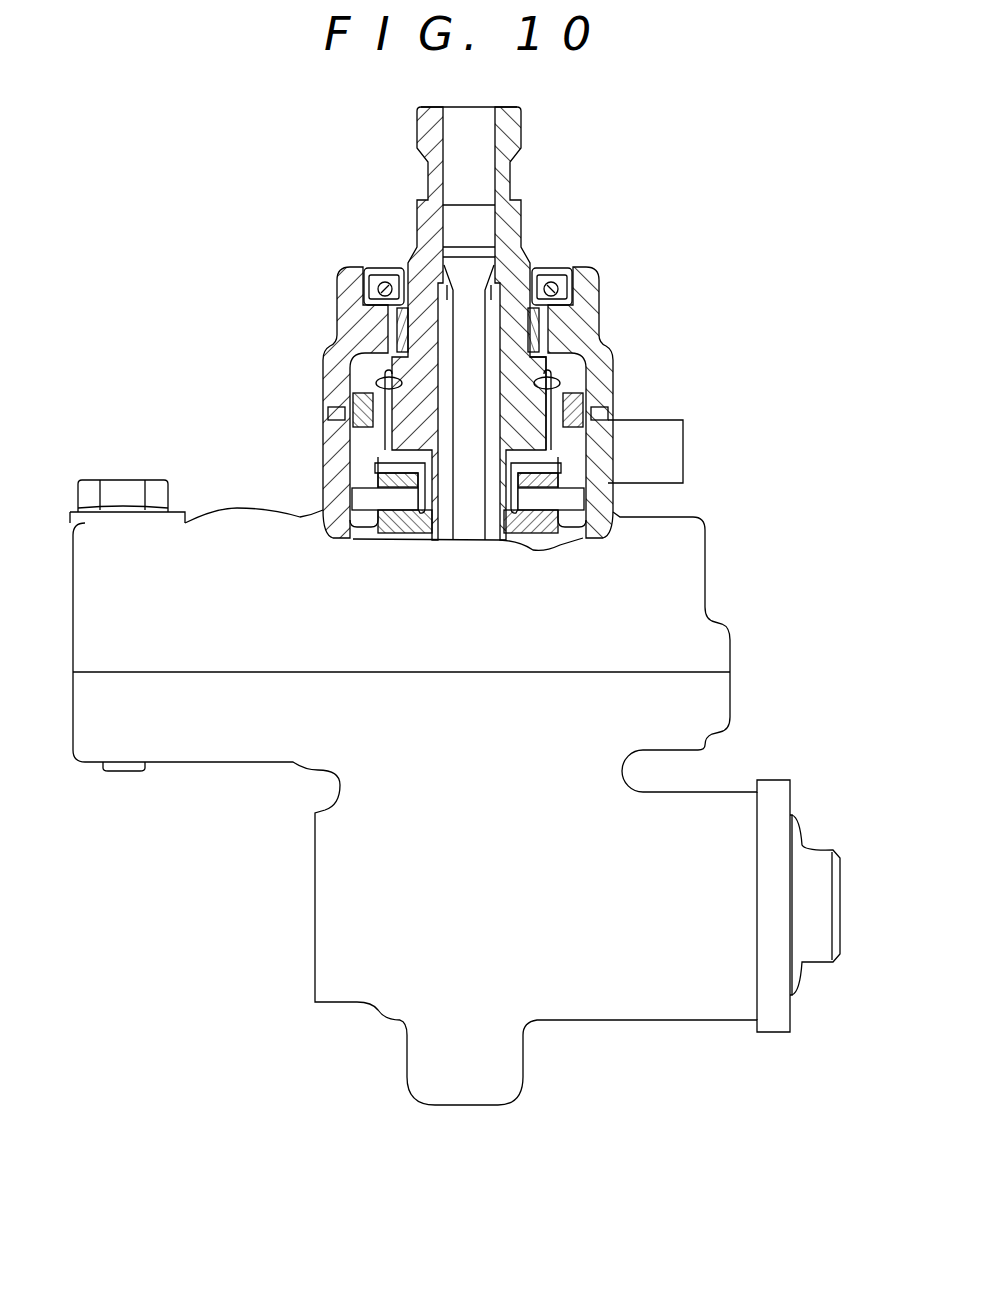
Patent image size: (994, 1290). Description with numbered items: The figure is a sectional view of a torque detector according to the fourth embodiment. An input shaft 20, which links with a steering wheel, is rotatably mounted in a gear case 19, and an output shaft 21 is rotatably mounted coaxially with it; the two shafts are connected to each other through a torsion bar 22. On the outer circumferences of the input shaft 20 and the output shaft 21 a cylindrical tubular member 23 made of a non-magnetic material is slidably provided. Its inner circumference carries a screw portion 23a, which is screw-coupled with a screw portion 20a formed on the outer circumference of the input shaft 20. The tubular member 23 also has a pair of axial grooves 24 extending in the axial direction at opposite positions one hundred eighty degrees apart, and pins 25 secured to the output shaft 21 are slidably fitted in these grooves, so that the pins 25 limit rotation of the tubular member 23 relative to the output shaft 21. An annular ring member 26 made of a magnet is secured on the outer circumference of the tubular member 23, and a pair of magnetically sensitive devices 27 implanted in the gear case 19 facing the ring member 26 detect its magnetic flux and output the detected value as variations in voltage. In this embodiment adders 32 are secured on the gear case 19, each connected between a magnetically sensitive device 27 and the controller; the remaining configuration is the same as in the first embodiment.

The gear case 19 is at (348, 325).
The input shaft 20 is at (513, 140).
The screw portion 20a is at (552, 380).
The output shaft 21 is at (560, 537).
The torsion bar 22 is at (467, 317).
The tubular member 23 is at (358, 447).
The screw portion 23a is at (373, 378).
The axial grooves 24 is at (358, 473).
The pins 25 is at (358, 502).
The ring member 26 is at (358, 398).
The magnetically sensitive devices 27 is at (337, 417).
The adders 32 is at (683, 458).